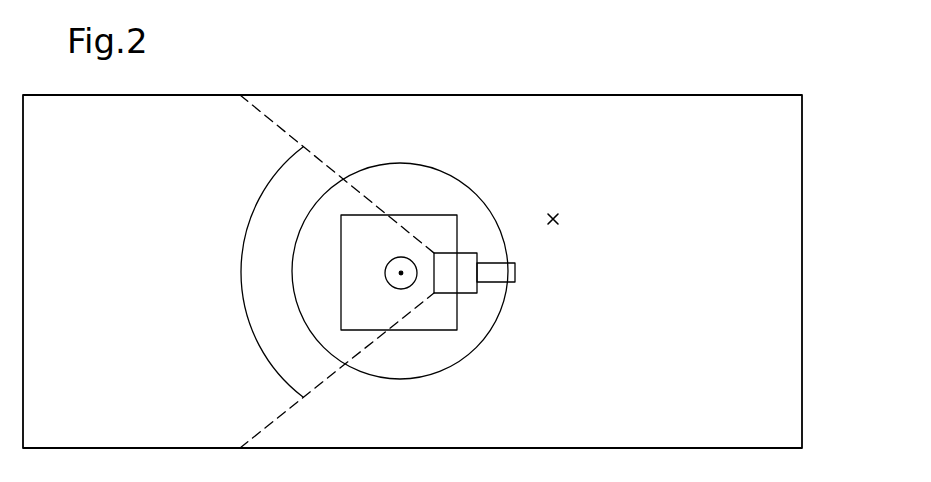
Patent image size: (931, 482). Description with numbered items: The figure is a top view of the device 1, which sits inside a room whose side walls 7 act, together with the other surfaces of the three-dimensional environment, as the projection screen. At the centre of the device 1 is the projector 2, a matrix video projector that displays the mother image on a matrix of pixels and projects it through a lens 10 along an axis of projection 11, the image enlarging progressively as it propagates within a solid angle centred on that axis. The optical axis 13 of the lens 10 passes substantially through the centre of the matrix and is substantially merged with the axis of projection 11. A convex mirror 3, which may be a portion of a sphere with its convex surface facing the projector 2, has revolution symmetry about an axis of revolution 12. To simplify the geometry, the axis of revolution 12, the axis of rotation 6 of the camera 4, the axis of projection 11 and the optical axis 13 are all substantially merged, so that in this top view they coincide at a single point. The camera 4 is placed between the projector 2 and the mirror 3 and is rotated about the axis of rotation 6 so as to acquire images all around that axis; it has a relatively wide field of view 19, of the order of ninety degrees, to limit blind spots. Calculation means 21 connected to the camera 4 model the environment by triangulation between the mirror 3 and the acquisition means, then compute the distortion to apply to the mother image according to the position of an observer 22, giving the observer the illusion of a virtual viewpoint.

The device 1 is at (540, 308).
The projector 2 is at (419, 271).
The calculation means 21 is at (457, 320).
The convex mirror 3 is at (505, 263).
The camera 4 is at (468, 253).
The axis of rotation 6 is at (439, 202).
The axis of projection 11 is at (439, 202).
The axis of revolution 12 is at (439, 202).
The optical axis 13 is at (401, 272).
The side walls 7 is at (602, 95).
The lens 10 is at (392, 288).
The field of view 19 is at (243, 261).
The observer 22 is at (558, 219).